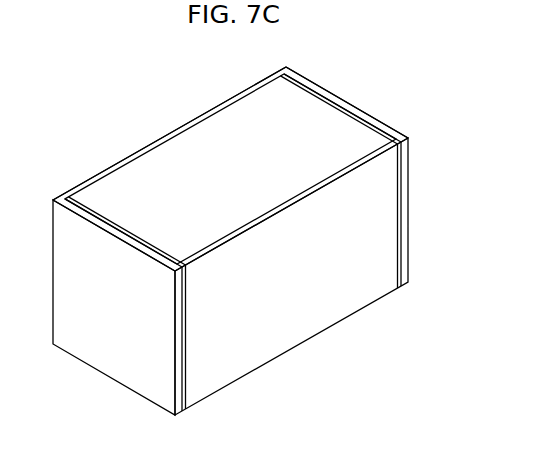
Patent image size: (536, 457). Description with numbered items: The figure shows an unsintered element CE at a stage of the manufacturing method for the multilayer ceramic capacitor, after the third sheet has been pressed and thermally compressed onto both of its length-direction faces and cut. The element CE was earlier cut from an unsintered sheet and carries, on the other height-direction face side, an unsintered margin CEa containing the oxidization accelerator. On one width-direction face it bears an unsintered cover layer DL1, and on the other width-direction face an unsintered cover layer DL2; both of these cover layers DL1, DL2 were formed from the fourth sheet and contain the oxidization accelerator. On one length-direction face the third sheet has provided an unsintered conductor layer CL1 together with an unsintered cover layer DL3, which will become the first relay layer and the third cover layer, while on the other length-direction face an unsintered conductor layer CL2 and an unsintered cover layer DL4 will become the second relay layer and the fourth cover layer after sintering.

The unsintered element CE is at (217, 155).
The unsintered margin CEa is at (222, 98).
The unsintered conductor layer CL1 is at (188, 398).
The unsintered conductor layer CL2 is at (328, 90).
The unsintered cover layer DL1 is at (293, 330).
The unsintered cover layer DL2 is at (141, 148).
The unsintered cover layer DL3 is at (115, 363).
The unsintered cover layer DL4 is at (366, 112).